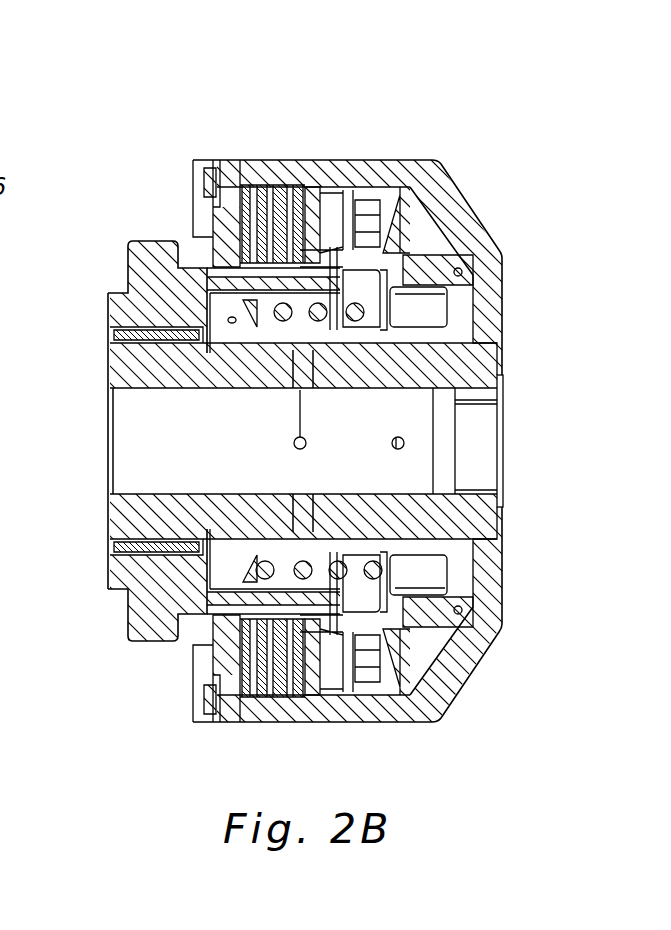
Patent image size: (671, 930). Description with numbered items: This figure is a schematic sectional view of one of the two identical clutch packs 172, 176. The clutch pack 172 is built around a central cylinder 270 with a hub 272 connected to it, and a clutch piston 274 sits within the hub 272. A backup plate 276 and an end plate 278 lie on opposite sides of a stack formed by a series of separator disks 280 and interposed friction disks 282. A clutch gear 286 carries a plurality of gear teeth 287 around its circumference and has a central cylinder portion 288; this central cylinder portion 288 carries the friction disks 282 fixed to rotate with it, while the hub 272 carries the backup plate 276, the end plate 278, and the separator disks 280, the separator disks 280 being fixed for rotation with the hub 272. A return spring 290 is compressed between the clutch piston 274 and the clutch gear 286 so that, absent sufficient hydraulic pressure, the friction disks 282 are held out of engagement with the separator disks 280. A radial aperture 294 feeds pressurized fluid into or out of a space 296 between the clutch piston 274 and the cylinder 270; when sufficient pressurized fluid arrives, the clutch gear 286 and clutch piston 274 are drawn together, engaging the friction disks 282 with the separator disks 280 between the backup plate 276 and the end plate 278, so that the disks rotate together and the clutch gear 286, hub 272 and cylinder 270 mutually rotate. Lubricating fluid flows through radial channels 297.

The clutch pack 172 is at (326, 386).
The clutch pack 176 is at (482, 152).
The central cylinder 270 is at (503, 331).
The hub 272 is at (503, 262).
The clutch piston 274 is at (380, 187).
The backup plate 276 is at (331, 159).
The end plate 278 is at (228, 160).
The separator disks 280 is at (255, 160).
The friction disks 282 is at (292, 158).
The clutch gear 286 is at (127, 268).
The gear teeth 287 is at (137, 643).
The central cylinder portion 288 is at (244, 557).
The return spring 290 is at (252, 345).
The radial aperture 294 is at (403, 451).
The space 296 is at (503, 363).
The radial channels 297 is at (300, 393).